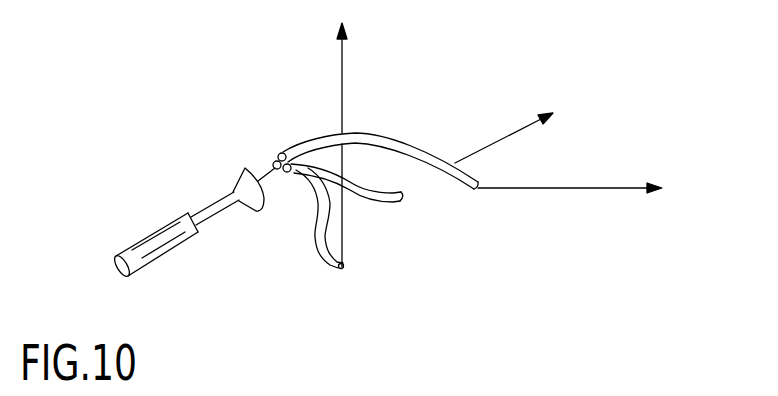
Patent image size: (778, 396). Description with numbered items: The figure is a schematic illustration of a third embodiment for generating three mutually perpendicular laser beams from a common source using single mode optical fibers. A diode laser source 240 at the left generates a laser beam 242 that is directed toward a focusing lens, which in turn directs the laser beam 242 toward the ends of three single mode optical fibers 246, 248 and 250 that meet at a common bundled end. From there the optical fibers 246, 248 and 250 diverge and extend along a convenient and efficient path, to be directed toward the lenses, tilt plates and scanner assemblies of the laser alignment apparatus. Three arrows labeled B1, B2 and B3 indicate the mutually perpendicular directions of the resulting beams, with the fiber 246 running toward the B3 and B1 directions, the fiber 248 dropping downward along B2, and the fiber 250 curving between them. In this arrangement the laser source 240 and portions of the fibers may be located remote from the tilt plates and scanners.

The diode laser source 240 is at (127, 250).
The laser beam 242 is at (217, 200).
The single mode optical fiber 246 is at (390, 138).
The single mode optical fiber 248 is at (320, 270).
The single mode optical fiber 250 is at (245, 167).
The first bending axis B1 is at (608, 193).
The second bending axis B2 is at (338, 75).
The third bending axis B3 is at (503, 138).